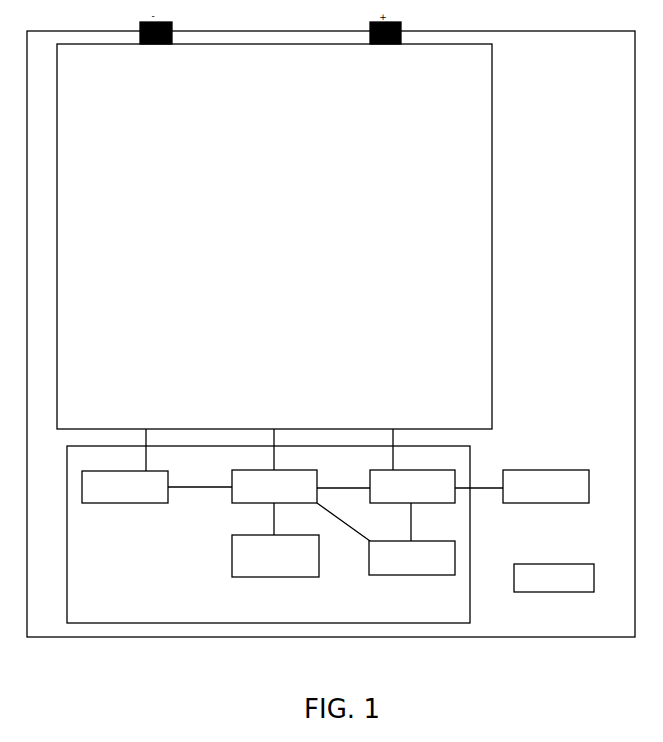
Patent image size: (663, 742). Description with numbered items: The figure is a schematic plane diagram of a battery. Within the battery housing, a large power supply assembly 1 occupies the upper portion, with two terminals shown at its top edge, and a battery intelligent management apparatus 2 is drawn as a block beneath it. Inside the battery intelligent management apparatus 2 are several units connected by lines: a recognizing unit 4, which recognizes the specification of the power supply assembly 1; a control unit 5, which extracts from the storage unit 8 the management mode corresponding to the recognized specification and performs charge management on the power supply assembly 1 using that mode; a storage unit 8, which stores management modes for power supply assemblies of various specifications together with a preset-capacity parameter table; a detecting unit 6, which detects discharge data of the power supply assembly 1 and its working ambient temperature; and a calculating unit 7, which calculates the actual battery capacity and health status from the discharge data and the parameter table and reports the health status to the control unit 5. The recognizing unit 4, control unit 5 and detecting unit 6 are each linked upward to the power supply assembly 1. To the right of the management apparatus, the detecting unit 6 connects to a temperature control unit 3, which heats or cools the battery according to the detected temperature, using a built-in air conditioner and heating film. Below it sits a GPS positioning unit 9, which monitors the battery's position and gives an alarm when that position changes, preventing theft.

The power supply assembly 1 is at (96, 218).
The battery intelligent management apparatus 2 is at (72, 450).
The temperature control unit 3 is at (582, 477).
The recognizing unit 4 is at (84, 478).
The control unit 5 is at (232, 488).
The detecting unit 6 is at (450, 478).
The calculating unit 7 is at (450, 555).
The storage unit 8 is at (232, 552).
The GPS positioning unit 9 is at (572, 577).